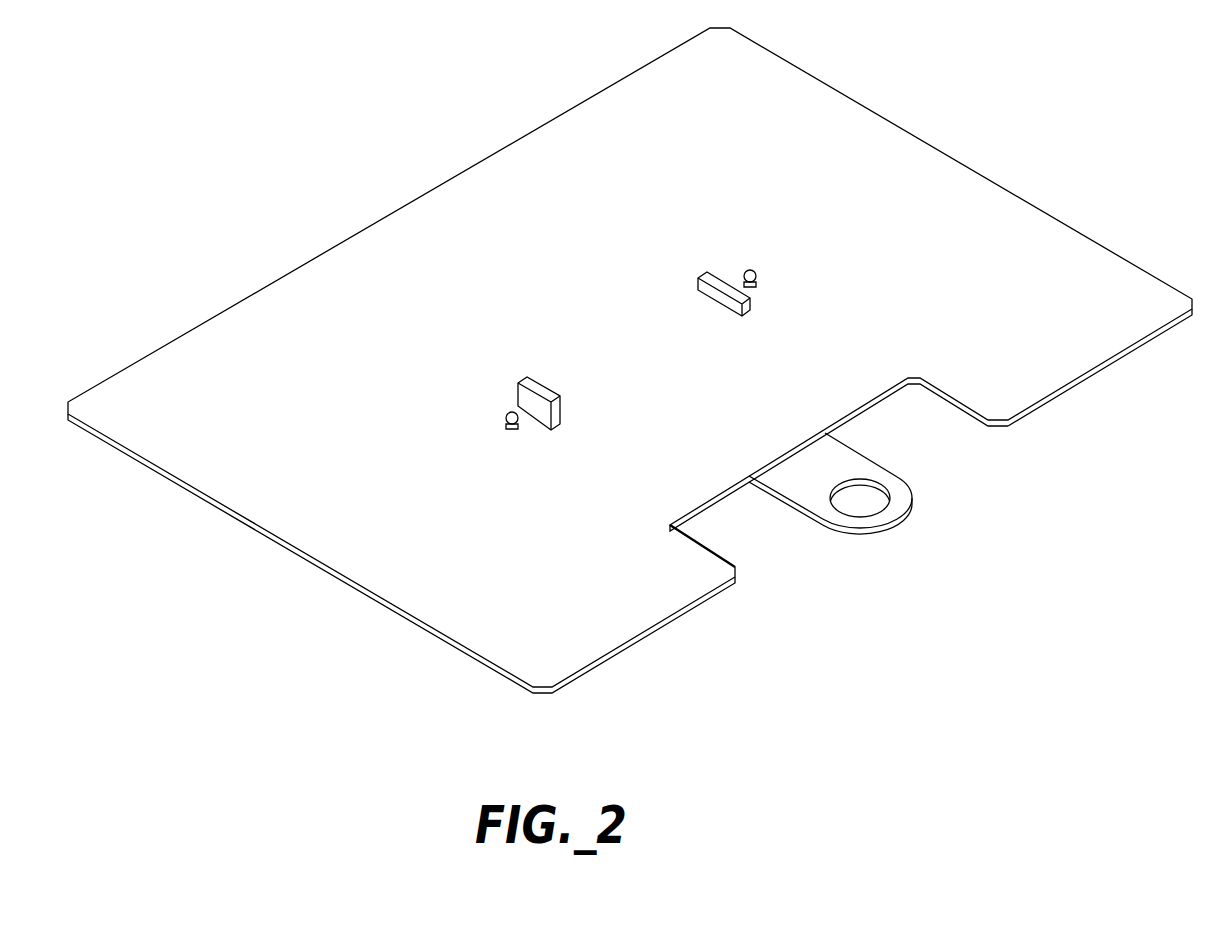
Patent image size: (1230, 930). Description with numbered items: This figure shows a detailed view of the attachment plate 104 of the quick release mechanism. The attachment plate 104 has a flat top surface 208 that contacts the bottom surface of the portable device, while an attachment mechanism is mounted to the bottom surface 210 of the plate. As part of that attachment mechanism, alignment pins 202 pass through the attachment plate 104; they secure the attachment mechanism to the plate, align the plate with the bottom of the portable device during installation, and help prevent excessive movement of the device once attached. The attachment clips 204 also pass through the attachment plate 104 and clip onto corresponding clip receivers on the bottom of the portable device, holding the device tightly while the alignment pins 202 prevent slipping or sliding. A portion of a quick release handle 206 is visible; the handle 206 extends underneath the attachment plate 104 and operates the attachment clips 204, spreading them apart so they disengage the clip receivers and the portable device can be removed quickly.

The attachment plate 104 is at (630, 360).
The alignment pins 202 is at (512, 431).
The attachment clips 204 is at (538, 385).
The quick release handle 206 is at (840, 533).
The flat top surface 208 is at (901, 327).
The bottom surface 210 is at (1047, 414).